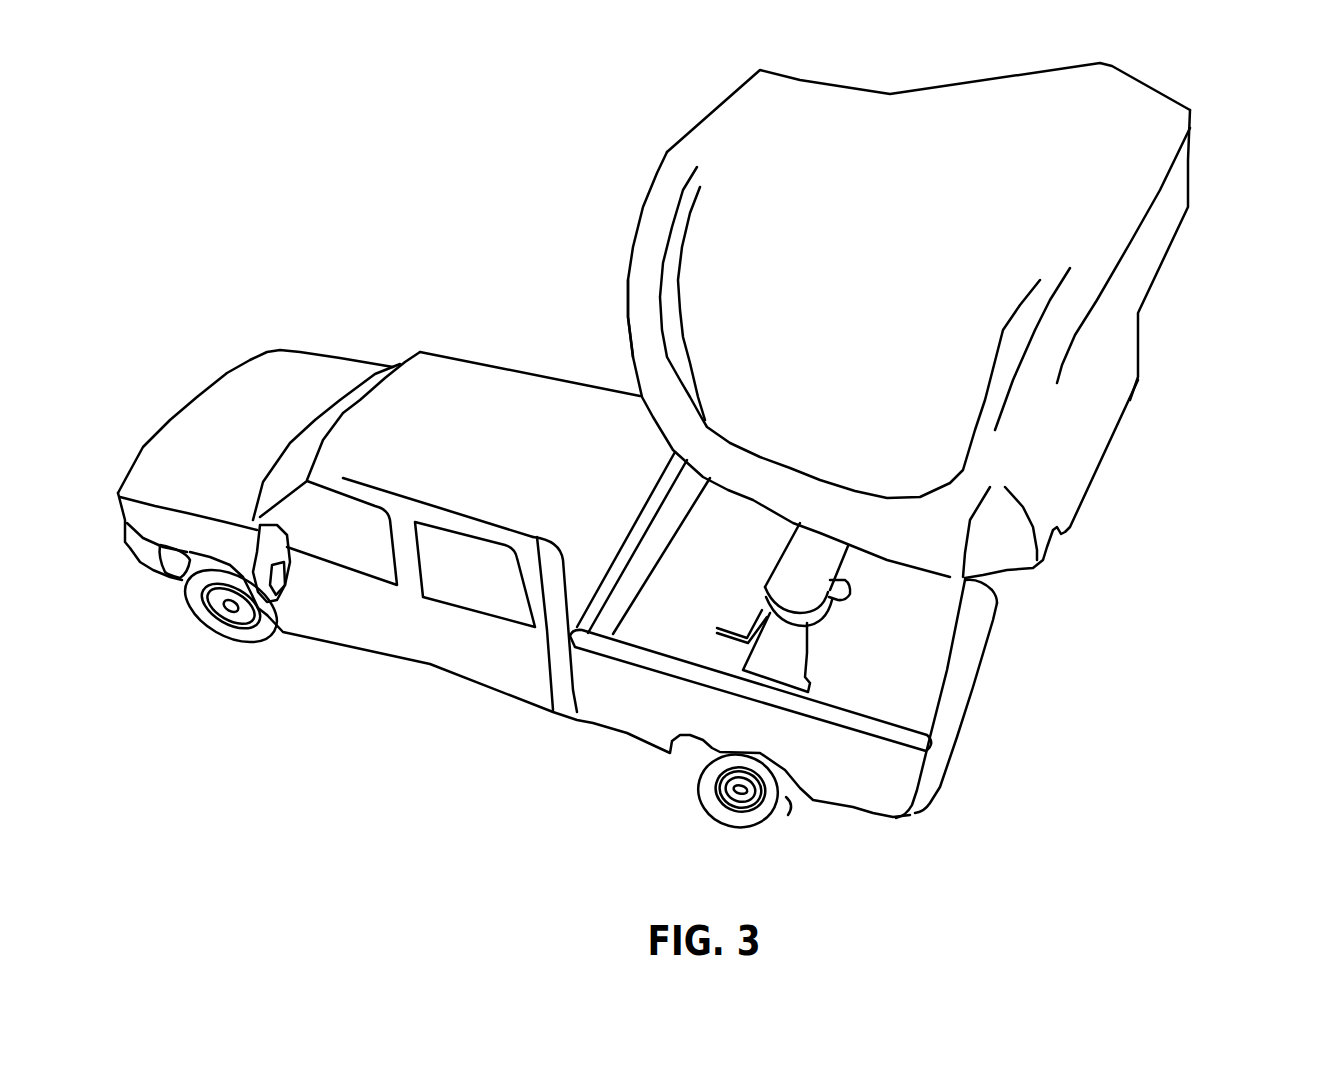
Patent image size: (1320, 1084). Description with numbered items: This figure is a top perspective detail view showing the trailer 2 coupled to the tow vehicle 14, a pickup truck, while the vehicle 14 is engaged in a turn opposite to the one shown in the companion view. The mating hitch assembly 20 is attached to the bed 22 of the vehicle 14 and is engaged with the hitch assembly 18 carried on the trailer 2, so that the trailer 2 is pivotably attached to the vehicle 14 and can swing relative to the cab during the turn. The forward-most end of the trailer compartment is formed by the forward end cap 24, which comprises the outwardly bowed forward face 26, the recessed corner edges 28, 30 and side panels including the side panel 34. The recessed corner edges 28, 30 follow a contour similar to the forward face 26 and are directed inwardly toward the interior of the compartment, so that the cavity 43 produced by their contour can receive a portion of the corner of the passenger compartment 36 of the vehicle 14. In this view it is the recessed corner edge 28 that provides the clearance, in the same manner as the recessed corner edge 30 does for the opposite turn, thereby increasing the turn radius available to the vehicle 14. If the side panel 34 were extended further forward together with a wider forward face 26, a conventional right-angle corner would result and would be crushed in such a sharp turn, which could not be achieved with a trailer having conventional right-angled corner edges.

The trailer 2 is at (1234, 209).
The tow vehicle 14 is at (310, 319).
The hitch assembly 18 is at (863, 573).
The mating hitch assembly 20 is at (669, 636).
The bed 22 is at (827, 665).
The forward end cap 24 is at (1003, 159).
The forward face 26 is at (873, 338).
The recessed corner edge 28 is at (632, 374).
The recessed corner edge 30 is at (1037, 558).
The side panel 34 is at (1112, 343).
The passenger compartment 36 is at (430, 373).
The cavity 43 is at (622, 245).